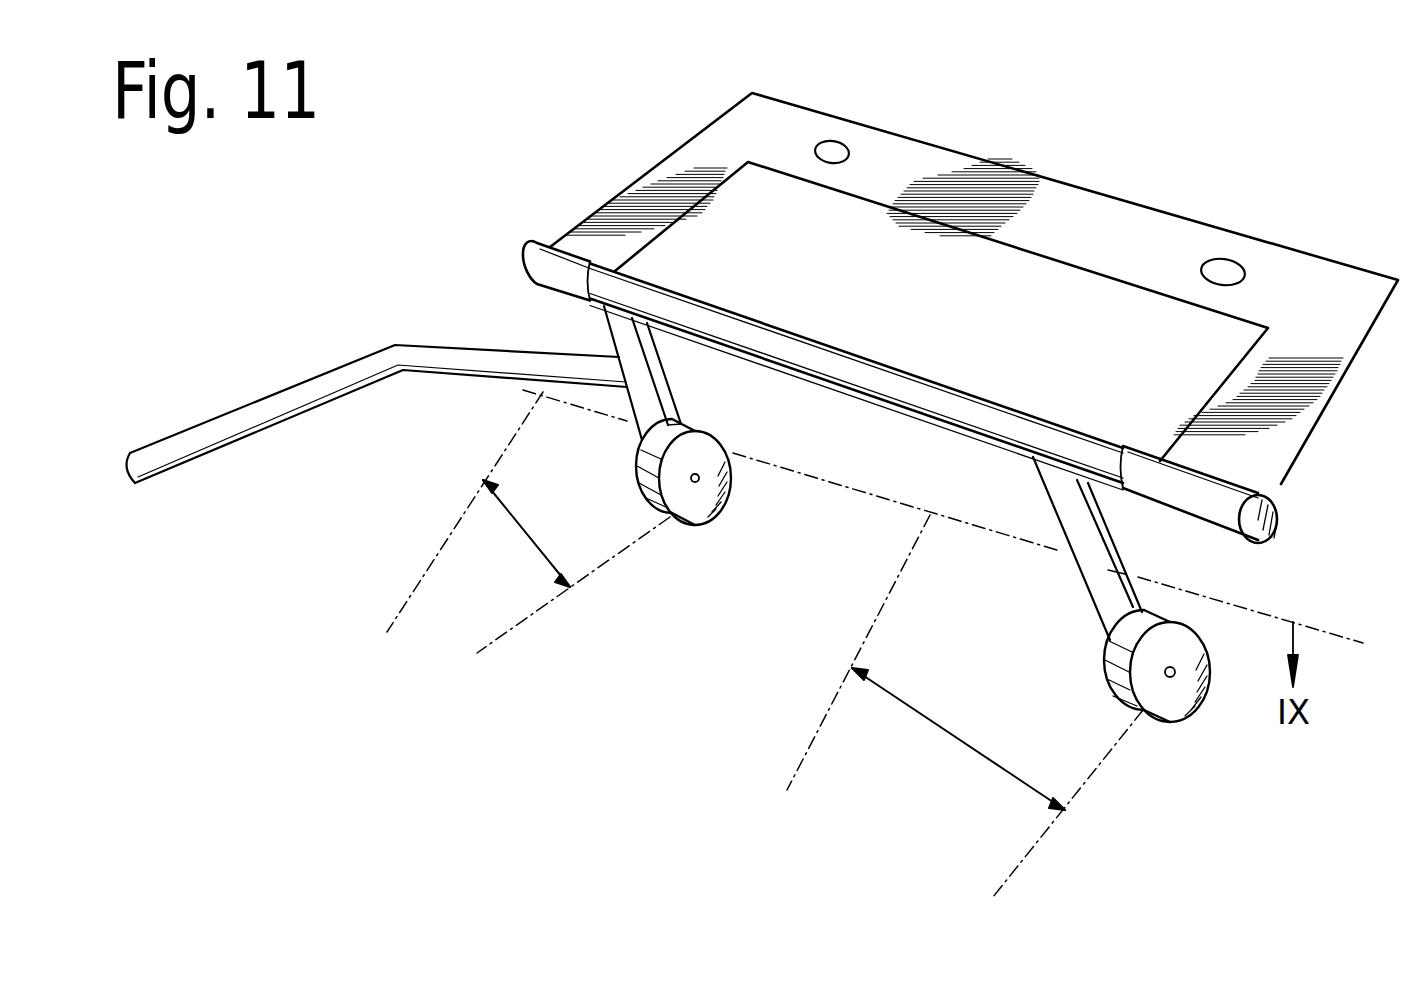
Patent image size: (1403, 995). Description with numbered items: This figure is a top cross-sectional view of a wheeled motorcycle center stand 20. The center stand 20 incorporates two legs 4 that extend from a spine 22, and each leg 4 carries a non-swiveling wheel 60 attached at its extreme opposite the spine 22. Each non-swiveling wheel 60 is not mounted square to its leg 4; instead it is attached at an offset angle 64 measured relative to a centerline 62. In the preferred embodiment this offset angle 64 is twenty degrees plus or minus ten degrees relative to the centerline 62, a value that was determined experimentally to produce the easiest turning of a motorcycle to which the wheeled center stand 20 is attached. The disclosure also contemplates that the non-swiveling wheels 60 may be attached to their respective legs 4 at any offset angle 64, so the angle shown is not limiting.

The wheeled motorcycle center stand 20 is at (1199, 156).
The spine 22 is at (863, 375).
The leg 4 is at (1072, 524).
The non-swiveling wheel 60 is at (717, 513).
The centerline 62 is at (457, 520).
The offset angle 64 is at (523, 533).